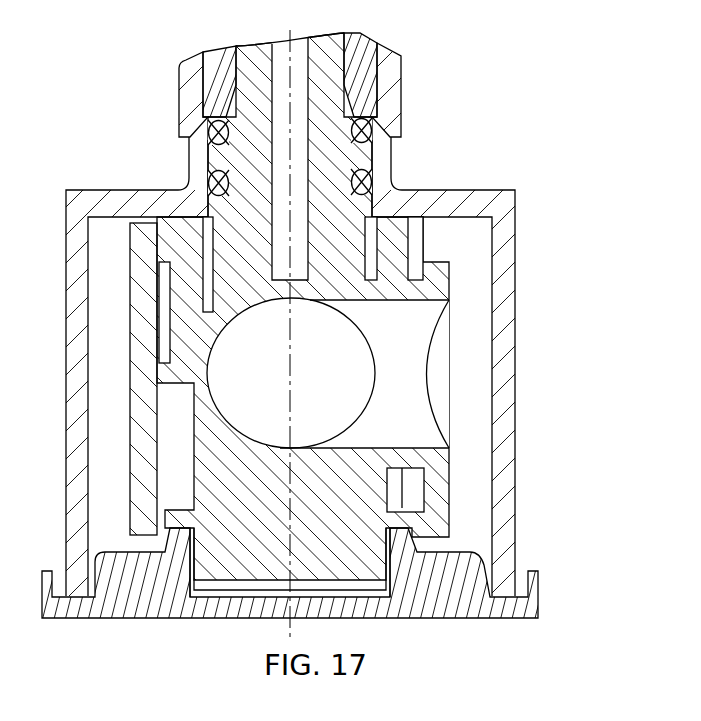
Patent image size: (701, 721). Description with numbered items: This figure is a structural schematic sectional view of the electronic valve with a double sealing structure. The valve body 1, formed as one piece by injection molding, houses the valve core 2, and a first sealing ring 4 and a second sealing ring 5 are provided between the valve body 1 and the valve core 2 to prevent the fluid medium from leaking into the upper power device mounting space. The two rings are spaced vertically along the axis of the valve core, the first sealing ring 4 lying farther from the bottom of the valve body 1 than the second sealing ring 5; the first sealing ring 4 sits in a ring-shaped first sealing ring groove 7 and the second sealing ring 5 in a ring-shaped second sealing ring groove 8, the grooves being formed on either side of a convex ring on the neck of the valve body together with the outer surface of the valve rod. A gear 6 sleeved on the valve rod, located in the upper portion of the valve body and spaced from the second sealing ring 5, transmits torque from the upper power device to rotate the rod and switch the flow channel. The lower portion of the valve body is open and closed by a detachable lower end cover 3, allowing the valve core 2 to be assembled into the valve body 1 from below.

The valve body 1 is at (503, 265).
The valve core 2 is at (413, 402).
The lower end cover 3 is at (453, 573).
The first sealing ring 4 is at (368, 175).
The second sealing ring 5 is at (368, 125).
The gear 6 is at (395, 57).
The first sealing ring groove 7 is at (212, 172).
The second sealing ring groove 8 is at (212, 122).